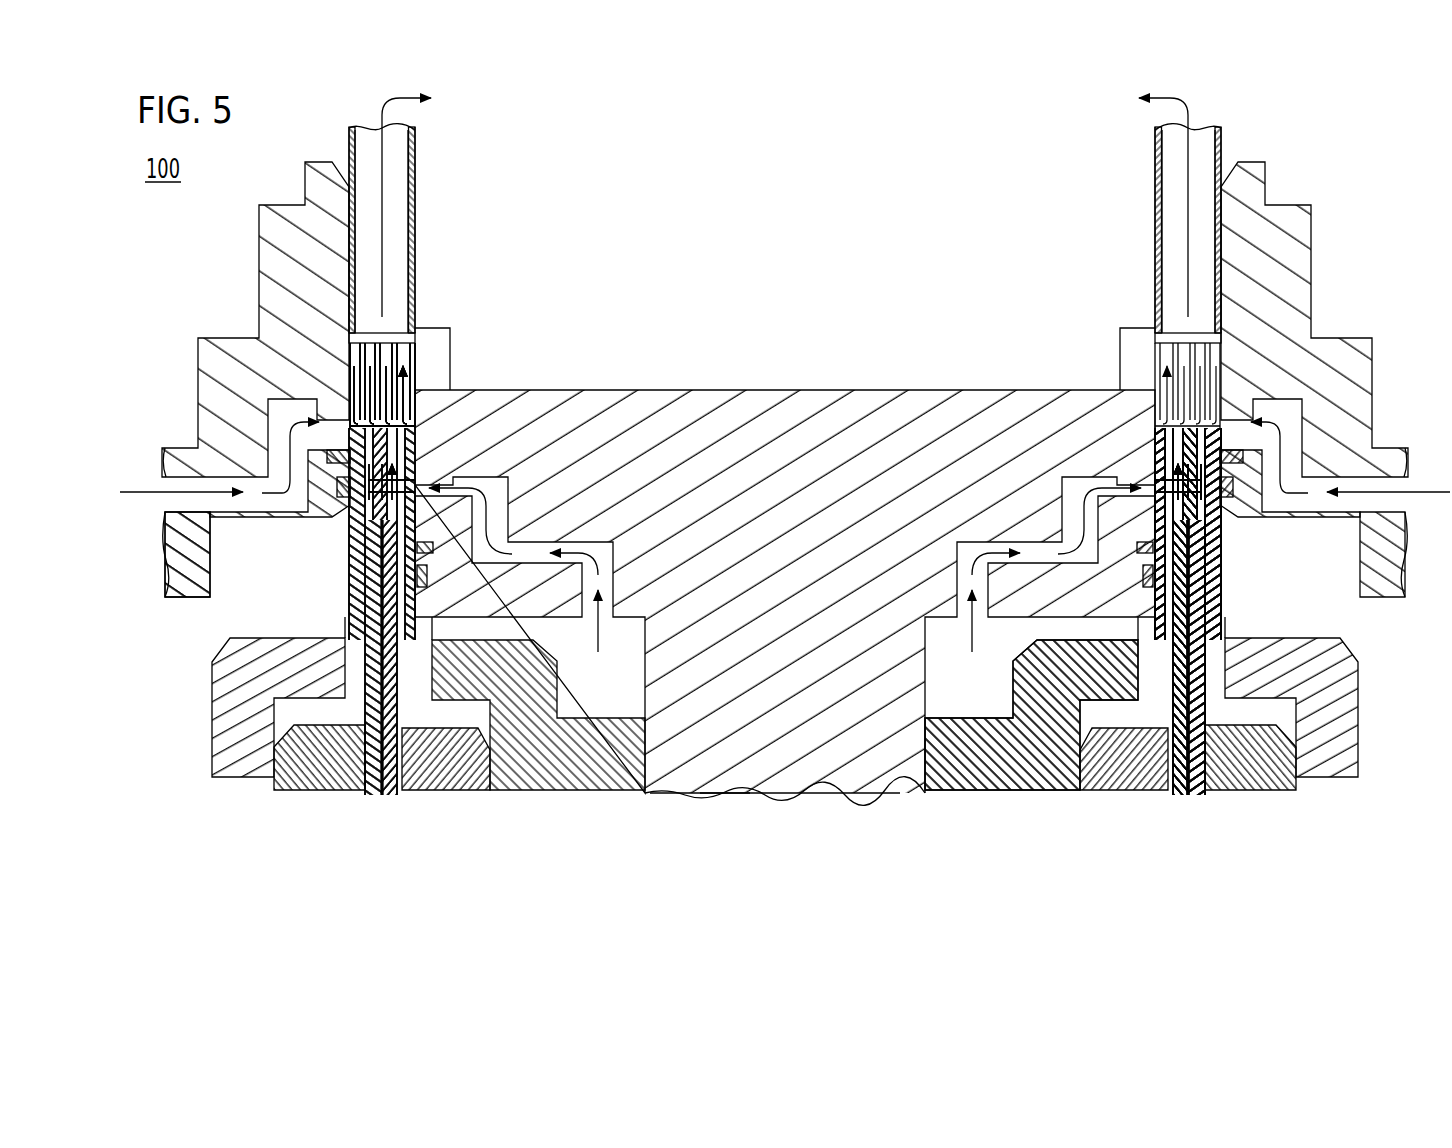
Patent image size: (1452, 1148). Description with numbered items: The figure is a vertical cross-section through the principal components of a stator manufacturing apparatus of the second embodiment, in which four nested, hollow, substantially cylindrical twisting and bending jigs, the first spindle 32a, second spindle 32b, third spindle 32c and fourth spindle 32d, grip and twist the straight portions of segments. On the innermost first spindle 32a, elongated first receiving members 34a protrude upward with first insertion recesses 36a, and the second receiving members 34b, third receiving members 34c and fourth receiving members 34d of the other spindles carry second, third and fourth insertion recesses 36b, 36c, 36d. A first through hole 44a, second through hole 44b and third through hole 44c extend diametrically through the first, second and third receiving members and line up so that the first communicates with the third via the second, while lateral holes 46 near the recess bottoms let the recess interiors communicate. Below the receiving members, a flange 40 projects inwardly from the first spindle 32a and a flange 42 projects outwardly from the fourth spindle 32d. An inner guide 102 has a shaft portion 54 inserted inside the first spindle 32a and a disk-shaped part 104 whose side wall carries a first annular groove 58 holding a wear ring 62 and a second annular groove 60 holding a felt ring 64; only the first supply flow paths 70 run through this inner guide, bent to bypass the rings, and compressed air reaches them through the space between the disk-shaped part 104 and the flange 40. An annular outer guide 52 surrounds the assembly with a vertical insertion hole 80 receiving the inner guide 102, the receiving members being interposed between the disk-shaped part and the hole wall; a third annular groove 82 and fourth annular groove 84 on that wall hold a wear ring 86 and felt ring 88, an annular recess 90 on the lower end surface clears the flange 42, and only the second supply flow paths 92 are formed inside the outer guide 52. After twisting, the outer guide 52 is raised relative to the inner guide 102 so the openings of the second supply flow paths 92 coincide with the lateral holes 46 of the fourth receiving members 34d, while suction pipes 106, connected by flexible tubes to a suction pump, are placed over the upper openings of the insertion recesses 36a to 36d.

The inner guide 102 is at (699, 800).
The disk-shaped part 104 is at (862, 400).
The suction pipes 106 is at (416, 205).
The outer guide 52 is at (1333, 357).
The shaft portion 54 is at (845, 783).
The insertion hole 80 is at (1160, 353).
The lateral holes 46 is at (1185, 445).
The third annular groove 82 is at (1227, 500).
The fourth annular groove 84 is at (1238, 468).
The first receiving members 34a is at (1160, 568).
The second receiving members 34b is at (1178, 600).
The third receiving members 34c is at (1198, 607).
The fourth receiving members 34d is at (1212, 613).
The first supply flow paths 70 is at (610, 600).
The first spindle 32a is at (982, 770).
The second spindle 32b is at (1122, 787).
The third spindle 32c is at (1208, 787).
The fourth spindle 32d is at (1310, 780).
The flange 40 is at (1053, 670).
The flange 42 is at (1320, 662).
The wear ring 62 is at (1150, 555).
The felt ring 64 is at (1142, 588).
The first insertion recesses 36a is at (418, 356).
The second insertion recesses 36b is at (400, 357).
The third insertion recesses 36c is at (350, 359).
The fourth insertion recesses 36d is at (350, 367).
The first through hole 44a is at (400, 797).
The second through hole 44b is at (385, 797).
The third through hole 44c is at (368, 797).
The wear ring 86 is at (342, 498).
The felt ring 88 is at (334, 465).
The annular recess 90 is at (272, 519).
The second supply flow paths 92 is at (240, 510).
The first annular groove 58 is at (421, 588).
The second annular groove 60 is at (430, 555).